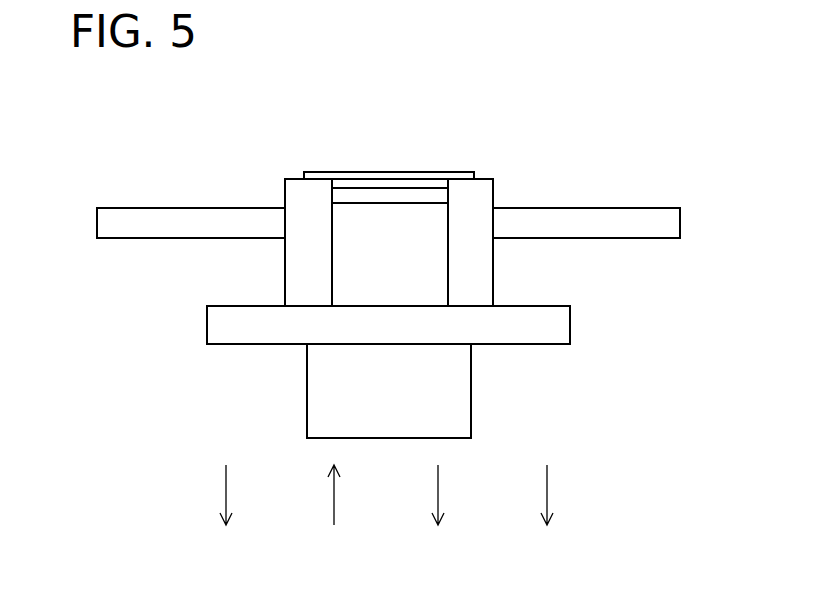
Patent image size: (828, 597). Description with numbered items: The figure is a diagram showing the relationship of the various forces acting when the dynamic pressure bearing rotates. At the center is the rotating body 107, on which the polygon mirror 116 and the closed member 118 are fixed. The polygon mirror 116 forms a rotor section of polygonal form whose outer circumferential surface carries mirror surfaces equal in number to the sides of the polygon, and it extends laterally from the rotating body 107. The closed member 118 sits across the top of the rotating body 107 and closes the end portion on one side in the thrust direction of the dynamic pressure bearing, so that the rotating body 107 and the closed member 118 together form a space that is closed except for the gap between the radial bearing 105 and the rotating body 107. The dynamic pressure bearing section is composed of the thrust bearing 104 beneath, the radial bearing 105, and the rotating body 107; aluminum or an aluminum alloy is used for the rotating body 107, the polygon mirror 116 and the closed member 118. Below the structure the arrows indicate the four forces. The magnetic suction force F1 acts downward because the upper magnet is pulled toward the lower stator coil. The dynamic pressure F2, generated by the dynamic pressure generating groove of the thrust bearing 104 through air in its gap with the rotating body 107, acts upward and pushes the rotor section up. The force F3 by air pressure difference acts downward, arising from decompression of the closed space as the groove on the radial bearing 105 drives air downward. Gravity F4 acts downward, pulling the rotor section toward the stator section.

The thrust bearing 104 is at (558, 327).
The radial bearing 105 is at (347, 273).
The rotating body 107 is at (482, 270).
The polygon mirror 116 is at (590, 218).
The closed member 118 is at (396, 180).
The magnetic suction force F1 is at (226, 515).
The dynamic pressure F2 is at (335, 515).
The force by air pressure difference F3 is at (440, 515).
The gravity F4 is at (547, 515).